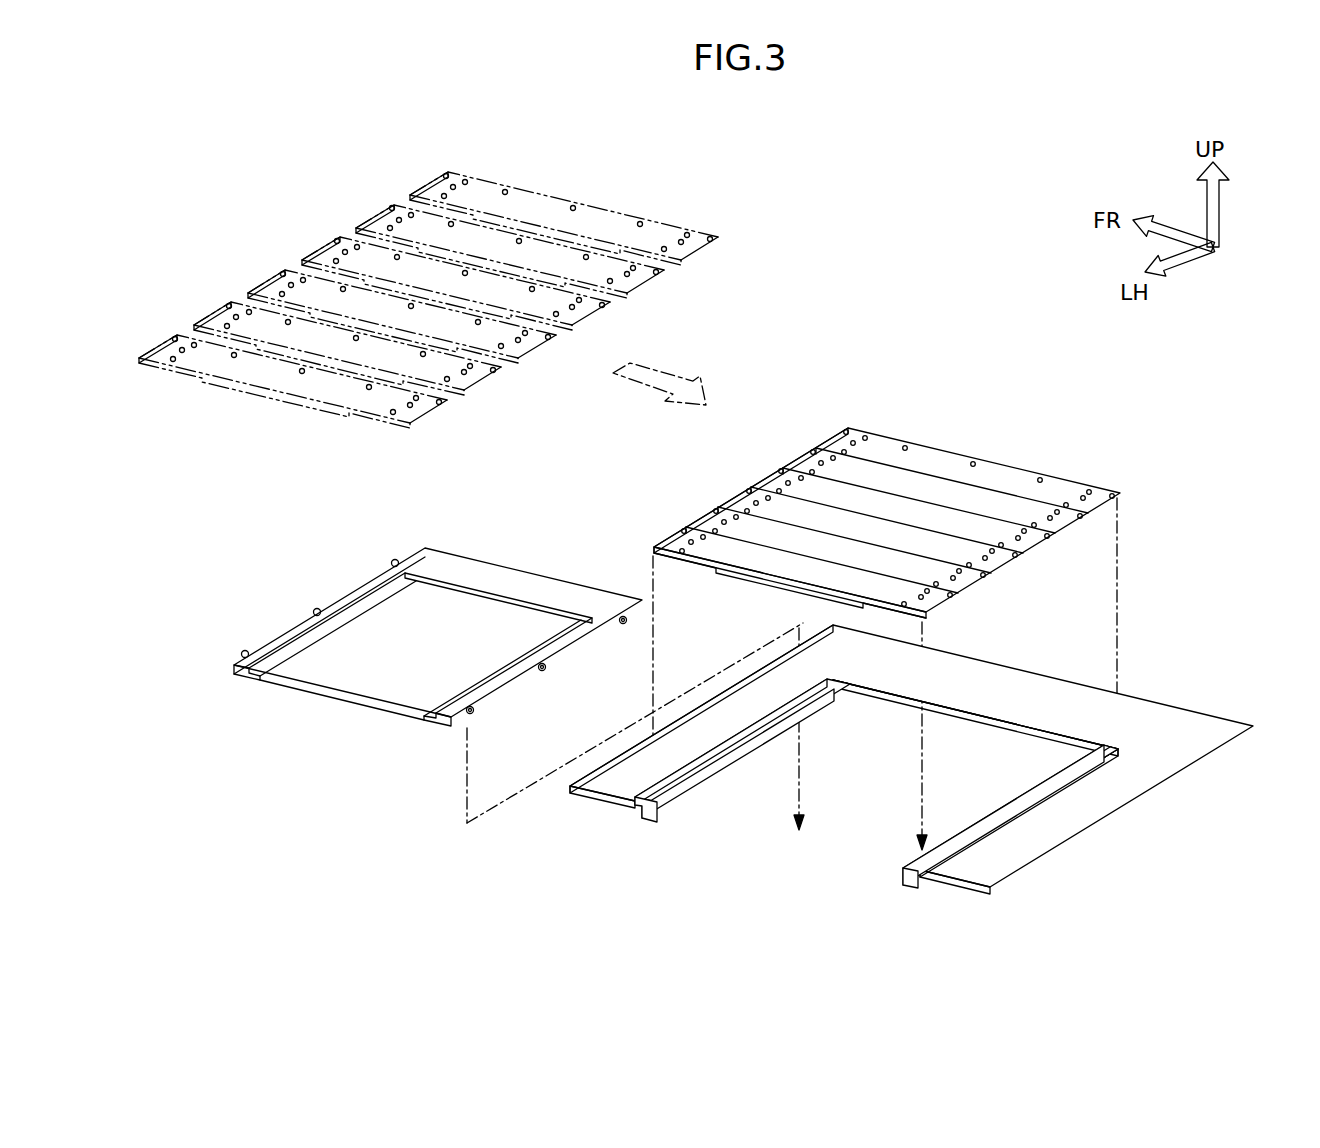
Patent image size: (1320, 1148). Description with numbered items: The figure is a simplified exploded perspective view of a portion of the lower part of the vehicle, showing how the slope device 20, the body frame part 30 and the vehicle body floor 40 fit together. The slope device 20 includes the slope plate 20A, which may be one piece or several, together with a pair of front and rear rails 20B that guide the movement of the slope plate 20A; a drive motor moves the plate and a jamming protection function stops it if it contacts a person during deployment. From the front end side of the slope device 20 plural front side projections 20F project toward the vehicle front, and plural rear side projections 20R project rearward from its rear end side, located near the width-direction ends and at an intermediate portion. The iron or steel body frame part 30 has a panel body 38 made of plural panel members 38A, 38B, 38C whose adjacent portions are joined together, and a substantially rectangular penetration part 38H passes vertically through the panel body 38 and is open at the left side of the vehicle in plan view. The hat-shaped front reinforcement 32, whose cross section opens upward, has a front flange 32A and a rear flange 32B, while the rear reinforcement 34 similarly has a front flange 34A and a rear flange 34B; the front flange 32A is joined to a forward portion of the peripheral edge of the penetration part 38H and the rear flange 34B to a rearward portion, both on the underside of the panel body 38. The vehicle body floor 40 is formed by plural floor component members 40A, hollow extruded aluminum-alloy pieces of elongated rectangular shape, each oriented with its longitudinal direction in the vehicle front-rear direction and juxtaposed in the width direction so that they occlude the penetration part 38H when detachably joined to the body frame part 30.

The slope device 20 is at (481, 540).
The slope plate 20A is at (400, 682).
The front and rear rails 20B is at (352, 604).
The front side projections 20F is at (395, 561).
The rear side projections 20R is at (623, 625).
The body frame part 30 is at (1180, 682).
The front reinforcement 32 is at (645, 826).
The front flange 32A is at (642, 807).
The rear flange 32B is at (681, 808).
The rear reinforcement 34 is at (909, 893).
The front flange 34A is at (905, 870).
The rear flange 34B is at (926, 876).
The panel body 38 is at (1044, 700).
The panel member 38A is at (826, 645).
The panel member 38B is at (977, 668).
The panel member 38C is at (1213, 724).
The penetration part 38H is at (990, 726).
The vehicle body floor 40 is at (570, 176).
The floor component member 40A is at (433, 180).